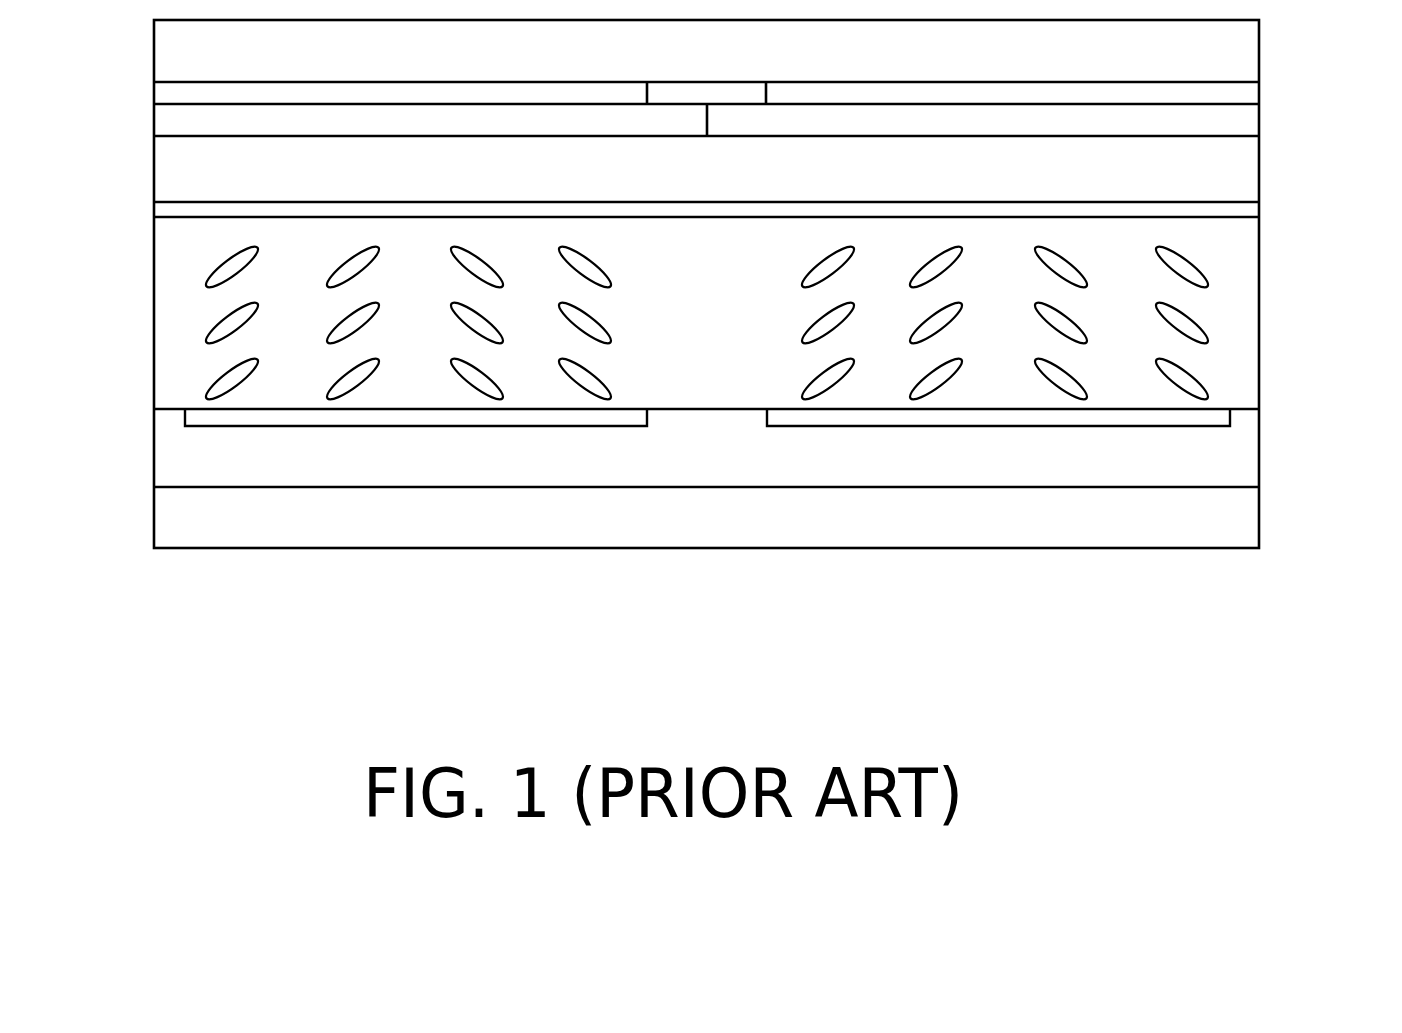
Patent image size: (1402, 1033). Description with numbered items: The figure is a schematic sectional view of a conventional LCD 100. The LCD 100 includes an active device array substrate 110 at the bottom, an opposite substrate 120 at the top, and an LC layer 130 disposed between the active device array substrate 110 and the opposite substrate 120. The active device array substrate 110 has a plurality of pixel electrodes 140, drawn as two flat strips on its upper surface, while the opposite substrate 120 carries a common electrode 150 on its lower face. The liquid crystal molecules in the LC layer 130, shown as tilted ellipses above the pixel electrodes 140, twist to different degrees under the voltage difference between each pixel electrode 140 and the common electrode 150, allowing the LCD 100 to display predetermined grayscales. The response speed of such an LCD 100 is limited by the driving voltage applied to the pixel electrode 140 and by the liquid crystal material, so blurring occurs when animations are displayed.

The LCD 100 is at (1333, 710).
The active device array substrate 110 is at (124, 408).
The opposite substrate 120 is at (124, 20).
The LC layer 130 is at (124, 200).
The pixel electrodes 140 is at (477, 418).
The common electrode 150 is at (1247, 211).